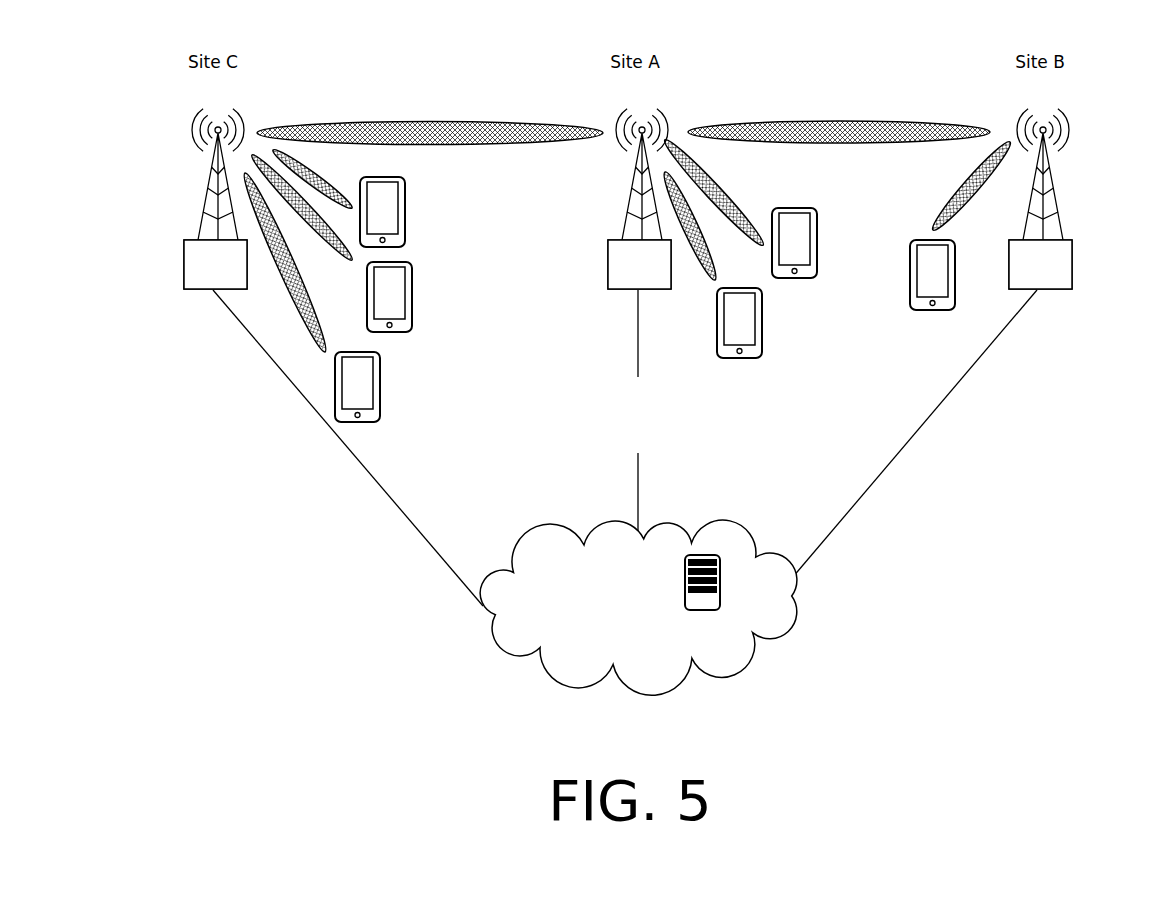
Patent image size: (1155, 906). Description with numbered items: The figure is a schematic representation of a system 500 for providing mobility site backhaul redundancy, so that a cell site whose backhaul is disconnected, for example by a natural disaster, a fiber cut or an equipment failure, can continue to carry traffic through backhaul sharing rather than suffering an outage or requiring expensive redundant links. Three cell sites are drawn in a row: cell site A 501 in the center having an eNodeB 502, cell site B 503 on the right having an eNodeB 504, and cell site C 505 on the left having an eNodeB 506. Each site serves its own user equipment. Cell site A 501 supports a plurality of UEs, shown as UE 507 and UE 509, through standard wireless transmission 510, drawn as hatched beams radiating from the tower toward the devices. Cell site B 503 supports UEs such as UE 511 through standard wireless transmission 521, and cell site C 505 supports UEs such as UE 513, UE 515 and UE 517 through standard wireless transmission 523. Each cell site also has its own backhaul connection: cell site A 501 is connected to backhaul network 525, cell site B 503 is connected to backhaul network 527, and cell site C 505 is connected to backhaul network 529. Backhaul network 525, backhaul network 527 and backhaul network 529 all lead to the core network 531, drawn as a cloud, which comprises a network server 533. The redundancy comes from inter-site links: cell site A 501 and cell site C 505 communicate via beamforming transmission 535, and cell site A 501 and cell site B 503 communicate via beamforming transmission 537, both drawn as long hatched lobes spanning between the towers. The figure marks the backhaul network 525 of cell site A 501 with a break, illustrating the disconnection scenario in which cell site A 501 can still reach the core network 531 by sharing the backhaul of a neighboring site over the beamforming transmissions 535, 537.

The system 500 is at (416, 36).
The cell site A 501 is at (640, 92).
The eNodeB 502 is at (614, 290).
The cell site B 503 is at (1050, 107).
The eNodeB 504 is at (1062, 290).
The cell site C 505 is at (200, 105).
The eNodeB 506 is at (196, 290).
The UE 507 is at (815, 225).
The UE 509 is at (762, 318).
The standard wireless transmission 510 is at (667, 184).
The UE 511 is at (933, 310).
The UE 513 is at (405, 212).
The UE 515 is at (410, 292).
The UE 517 is at (380, 388).
The standard wireless transmission 521 is at (962, 180).
The standard wireless transmission 523 is at (352, 208).
The backhaul network 525 is at (637, 485).
The backhaul network 527 is at (890, 490).
The backhaul network 529 is at (405, 512).
The core network 531 is at (795, 607).
The network server 533 is at (685, 580).
The beamforming transmission 535 is at (413, 122).
The beamforming transmission 537 is at (862, 122).